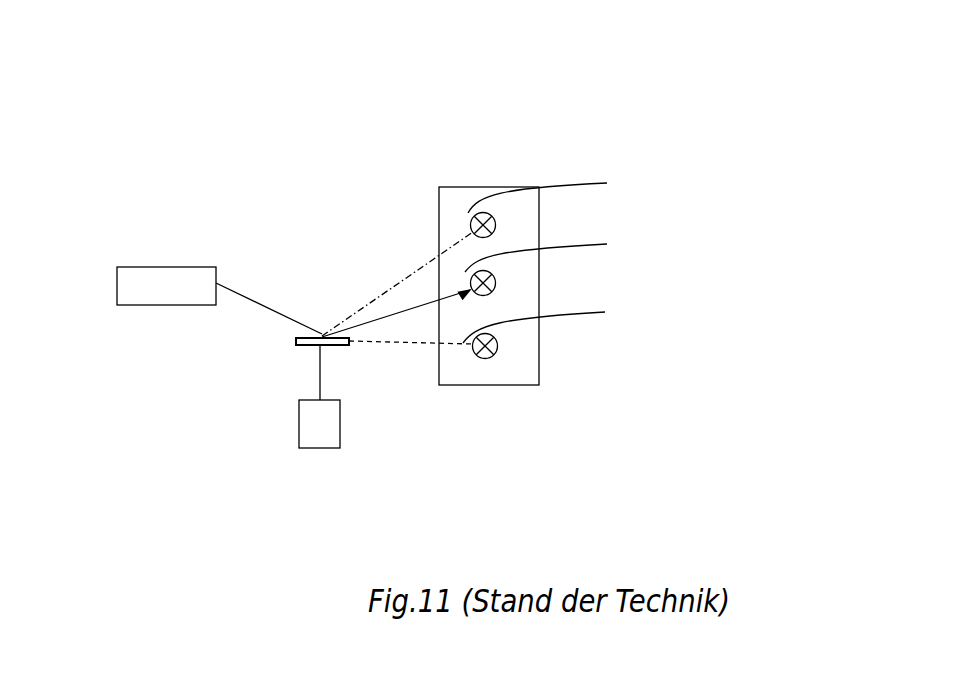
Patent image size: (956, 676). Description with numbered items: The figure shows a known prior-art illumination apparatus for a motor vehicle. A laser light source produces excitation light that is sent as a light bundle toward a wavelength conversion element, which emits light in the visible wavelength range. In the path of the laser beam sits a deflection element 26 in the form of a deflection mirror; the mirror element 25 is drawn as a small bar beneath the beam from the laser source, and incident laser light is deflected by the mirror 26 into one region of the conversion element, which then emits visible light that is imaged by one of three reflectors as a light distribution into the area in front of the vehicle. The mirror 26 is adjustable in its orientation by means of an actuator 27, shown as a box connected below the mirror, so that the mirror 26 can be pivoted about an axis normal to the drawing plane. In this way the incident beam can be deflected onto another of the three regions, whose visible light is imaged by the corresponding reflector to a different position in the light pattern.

The mirror 25 is at (323, 297).
The deflection element 26 is at (293, 343).
The actuator 27 is at (298, 425).